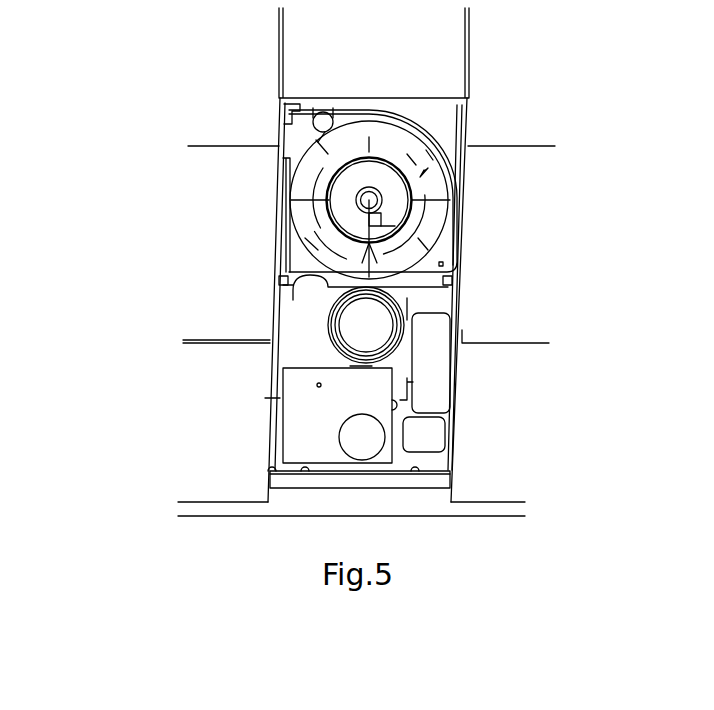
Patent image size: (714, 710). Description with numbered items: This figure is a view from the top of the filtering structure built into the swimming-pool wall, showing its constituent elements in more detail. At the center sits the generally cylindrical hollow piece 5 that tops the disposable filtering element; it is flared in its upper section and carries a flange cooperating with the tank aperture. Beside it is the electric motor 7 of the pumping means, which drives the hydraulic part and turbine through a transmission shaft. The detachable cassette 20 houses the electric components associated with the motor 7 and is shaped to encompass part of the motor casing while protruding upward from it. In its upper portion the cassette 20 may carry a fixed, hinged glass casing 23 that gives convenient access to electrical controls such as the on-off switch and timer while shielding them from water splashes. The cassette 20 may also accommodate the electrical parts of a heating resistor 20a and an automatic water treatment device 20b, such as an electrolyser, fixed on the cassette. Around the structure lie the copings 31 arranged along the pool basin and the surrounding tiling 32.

The tiling 32 is at (220, 78).
The generally cylindrical hollow piece 5 is at (437, 158).
The electric motor 7 is at (368, 326).
The detachable cassette 20 is at (297, 325).
The heating resistor 20a is at (275, 414).
The automatic water treatment device 20b is at (302, 420).
The hinged glass casing 23 is at (430, 362).
The copings 31 is at (215, 463).